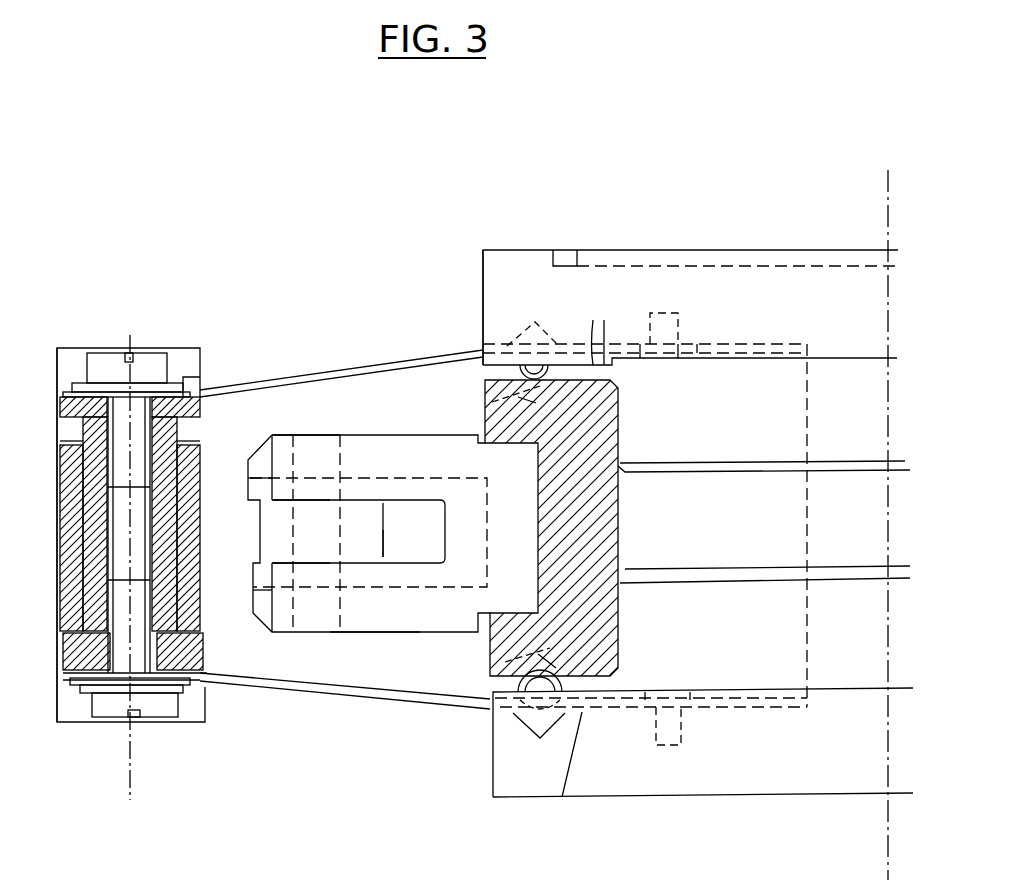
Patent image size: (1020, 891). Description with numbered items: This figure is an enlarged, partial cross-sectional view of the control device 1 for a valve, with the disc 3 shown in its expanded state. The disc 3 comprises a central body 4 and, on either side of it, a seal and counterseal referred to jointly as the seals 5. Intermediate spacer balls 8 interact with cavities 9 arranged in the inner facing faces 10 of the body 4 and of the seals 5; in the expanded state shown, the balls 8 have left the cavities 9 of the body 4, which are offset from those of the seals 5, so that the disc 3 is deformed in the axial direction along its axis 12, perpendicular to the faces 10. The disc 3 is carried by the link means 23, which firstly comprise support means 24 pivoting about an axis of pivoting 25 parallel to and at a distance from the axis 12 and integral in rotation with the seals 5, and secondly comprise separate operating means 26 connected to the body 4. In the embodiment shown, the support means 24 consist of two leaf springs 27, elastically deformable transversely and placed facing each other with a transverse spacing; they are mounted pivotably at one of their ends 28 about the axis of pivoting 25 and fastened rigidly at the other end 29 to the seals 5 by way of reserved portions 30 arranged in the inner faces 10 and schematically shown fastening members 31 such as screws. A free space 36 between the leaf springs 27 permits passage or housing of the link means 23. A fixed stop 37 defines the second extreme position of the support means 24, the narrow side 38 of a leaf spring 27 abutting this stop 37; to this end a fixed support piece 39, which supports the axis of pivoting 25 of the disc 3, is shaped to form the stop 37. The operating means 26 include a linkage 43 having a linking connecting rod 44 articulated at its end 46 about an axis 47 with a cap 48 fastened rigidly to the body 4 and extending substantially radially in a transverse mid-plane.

The control device 1 is at (217, 445).
The disc 3 is at (487, 285).
The central body 4 is at (492, 650).
The seals 5 is at (526, 272).
The spacer balls 8 is at (515, 372).
The cavities 9 is at (507, 323).
The inner facing faces 10 is at (596, 330).
The axis 12 is at (887, 212).
The link means 23 is at (357, 615).
The support means 24 is at (233, 682).
The axis of pivoting 25 is at (128, 765).
The operating means 26 is at (388, 618).
The leaf springs 27 is at (340, 367).
The ends of the leaf springs 28 is at (185, 383).
The other ends of the leaf springs 29 is at (510, 712).
The reserved portions 30 is at (560, 787).
The fastening members 31 is at (680, 326).
The free space 36 is at (354, 590).
The fixed stop 37 is at (190, 353).
The narrow side 38 is at (320, 440).
The fixed support piece 39 is at (205, 600).
The linkage 43 is at (366, 514).
The linking connecting rod 44 is at (273, 545).
The other end of the connecting rod 46 is at (373, 555).
The axis 47 is at (313, 443).
The cap 48 is at (392, 463).